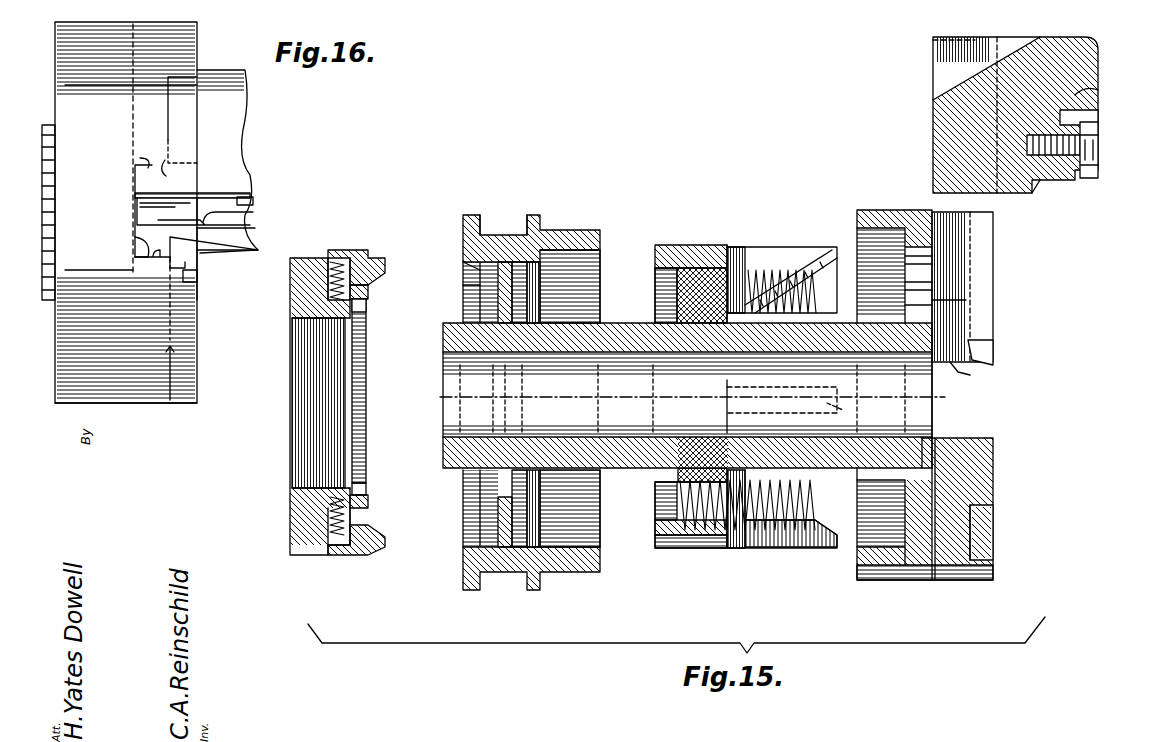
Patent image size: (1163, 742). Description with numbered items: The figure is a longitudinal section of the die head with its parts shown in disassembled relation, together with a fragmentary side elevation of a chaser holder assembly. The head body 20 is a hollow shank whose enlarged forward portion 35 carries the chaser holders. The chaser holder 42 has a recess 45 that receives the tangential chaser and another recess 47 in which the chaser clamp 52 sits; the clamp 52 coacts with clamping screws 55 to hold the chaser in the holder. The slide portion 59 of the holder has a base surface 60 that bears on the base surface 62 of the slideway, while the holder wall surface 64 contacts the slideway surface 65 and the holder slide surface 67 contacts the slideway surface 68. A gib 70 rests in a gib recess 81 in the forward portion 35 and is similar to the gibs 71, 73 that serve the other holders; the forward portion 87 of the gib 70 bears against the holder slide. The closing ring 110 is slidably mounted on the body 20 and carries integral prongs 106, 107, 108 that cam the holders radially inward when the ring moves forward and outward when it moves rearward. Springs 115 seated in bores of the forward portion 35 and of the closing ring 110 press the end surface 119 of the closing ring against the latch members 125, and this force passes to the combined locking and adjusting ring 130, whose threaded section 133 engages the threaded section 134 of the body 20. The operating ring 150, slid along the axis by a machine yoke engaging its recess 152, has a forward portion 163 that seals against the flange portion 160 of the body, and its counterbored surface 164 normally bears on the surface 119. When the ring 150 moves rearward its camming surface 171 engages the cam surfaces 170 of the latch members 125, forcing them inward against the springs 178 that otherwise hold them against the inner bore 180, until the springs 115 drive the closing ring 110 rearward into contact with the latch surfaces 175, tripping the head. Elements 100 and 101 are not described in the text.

In FIG. 16, the head body 20 is at (115, 400).
In FIG. 15, the head body 20 is at (892, 343).
In FIG. 16, the forward portion of head body 35 is at (183, 328).
In FIG. 15, the forward portion of head body 35 is at (910, 195).
In FIG. 16, the chaser holder 42 is at (238, 147).
In FIG. 15, the chaser holder 42 is at (1082, 62).
In FIG. 15, the recess 45 is at (1055, 178).
In FIG. 15, the recess 47 is at (1085, 87).
In FIG. 15, the chaser clamp 52 is at (1098, 112).
In FIG. 15, the clamping screws 55 is at (1100, 147).
In FIG. 16, the slide portion 59 is at (133, 183).
In FIG. 16, the base surface 60 is at (140, 200).
In FIG. 16, the base surface of slideway 62 is at (134, 220).
In FIG. 15, the base surface of slideway 62 is at (940, 307).
In FIG. 16, the wall surface 64 is at (147, 163).
In FIG. 16, the slideway surface 65 is at (179, 175).
In FIG. 15, the slideway surface 65 is at (982, 258).
In FIG. 16, the holder slide surface 67 is at (163, 262).
In FIG. 16, the slideway surface 68 is at (138, 250).
In FIG. 15, the slideway surface 68 is at (953, 353).
In FIG. 16, the gib 70 is at (190, 260).
In FIG. 15, the gib 71 is at (985, 347).
In FIG. 15, the gib 73 is at (995, 527).
In FIG. 16, the gib recess 81 is at (185, 298).
In FIG. 16, the forward portion of gib 87 is at (190, 240).
In FIG. 16, the latch 100 is at (253, 217).
In FIG. 16, the pin 101 is at (253, 203).
In FIG. 15, the prong 106 is at (763, 255).
In FIG. 15, the prong 107 is at (852, 406).
In FIG. 15, the prong 108 is at (800, 537).
In FIG. 15, the closing ring 110 is at (703, 245).
In FIG. 15, the springs 115 is at (808, 292).
In FIG. 15, the end surface of closing ring 119 is at (655, 257).
In FIG. 15, the latch members 125 is at (342, 253).
In FIG. 15, the combined locking and adjusting ring 130 is at (307, 260).
In FIG. 15, the threaded section 133 is at (723, 320).
In FIG. 15, the threaded section 134 is at (370, 335).
In FIG. 15, the operating ring 150 is at (460, 222).
In FIG. 15, the recess 152 is at (497, 216).
In FIG. 15, the flange portion 160 is at (870, 210).
In FIG. 15, the forward portion of operating ring 163 is at (600, 238).
In FIG. 15, the counterbored surface 164 is at (565, 233).
In FIG. 15, the cam surfaces 170 is at (363, 252).
In FIG. 15, the camming surface 171 is at (527, 233).
In FIG. 15, the latch member surfaces 175 is at (367, 500).
In FIG. 15, the springs 178 is at (368, 290).
In FIG. 15, the inner bore 180 is at (460, 280).